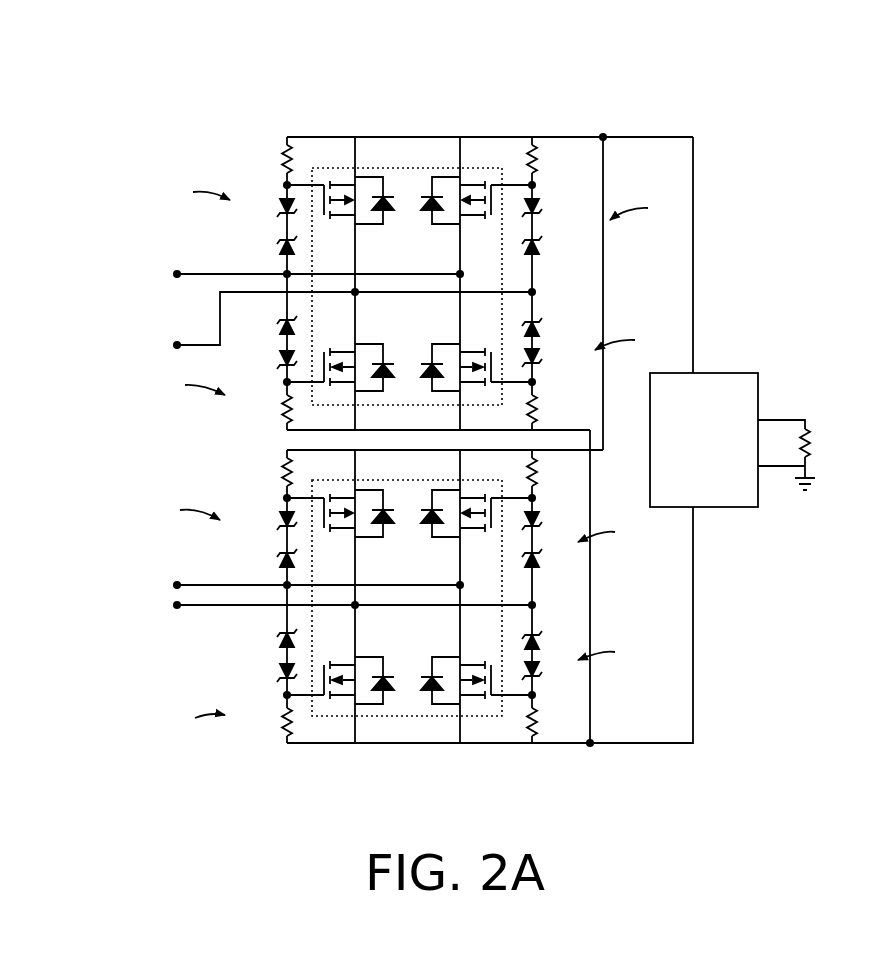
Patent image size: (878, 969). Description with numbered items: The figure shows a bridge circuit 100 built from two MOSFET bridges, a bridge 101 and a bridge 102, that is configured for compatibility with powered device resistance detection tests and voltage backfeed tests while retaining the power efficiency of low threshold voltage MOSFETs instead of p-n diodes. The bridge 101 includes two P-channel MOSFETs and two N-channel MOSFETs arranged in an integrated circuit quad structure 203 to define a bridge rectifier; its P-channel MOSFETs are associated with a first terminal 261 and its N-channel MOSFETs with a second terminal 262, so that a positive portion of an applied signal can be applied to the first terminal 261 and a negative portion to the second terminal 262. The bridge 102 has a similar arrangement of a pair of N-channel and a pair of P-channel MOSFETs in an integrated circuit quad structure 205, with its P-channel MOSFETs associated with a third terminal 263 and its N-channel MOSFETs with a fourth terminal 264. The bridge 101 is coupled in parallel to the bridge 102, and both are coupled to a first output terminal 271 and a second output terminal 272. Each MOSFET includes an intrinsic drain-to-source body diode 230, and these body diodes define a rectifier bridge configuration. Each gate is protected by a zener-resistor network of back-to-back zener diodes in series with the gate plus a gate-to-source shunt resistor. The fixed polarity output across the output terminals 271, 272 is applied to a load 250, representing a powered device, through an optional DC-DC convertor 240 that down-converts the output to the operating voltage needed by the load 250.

The bridge circuit 100 is at (142, 70).
The bridge 101 is at (419, 246).
The bridge 102 is at (395, 619).
The integrated circuit quad structure 203 is at (452, 168).
The integrated circuit quad structure 205 is at (478, 716).
The body diode 230 is at (430, 374).
The DC-DC convertor 240 is at (688, 451).
The load 250 is at (813, 435).
The first terminal 261 is at (170, 274).
The second terminal 262 is at (170, 345).
The third terminal 263 is at (170, 586).
The fourth terminal 264 is at (170, 611).
The first output terminal 271 is at (606, 136).
The second output terminal 272 is at (593, 745).